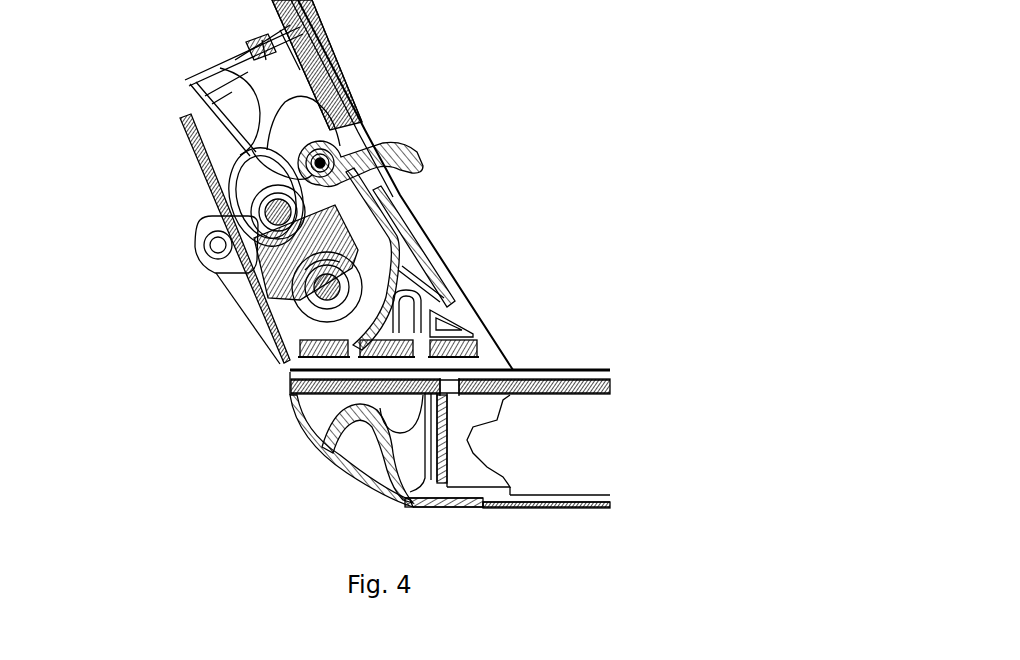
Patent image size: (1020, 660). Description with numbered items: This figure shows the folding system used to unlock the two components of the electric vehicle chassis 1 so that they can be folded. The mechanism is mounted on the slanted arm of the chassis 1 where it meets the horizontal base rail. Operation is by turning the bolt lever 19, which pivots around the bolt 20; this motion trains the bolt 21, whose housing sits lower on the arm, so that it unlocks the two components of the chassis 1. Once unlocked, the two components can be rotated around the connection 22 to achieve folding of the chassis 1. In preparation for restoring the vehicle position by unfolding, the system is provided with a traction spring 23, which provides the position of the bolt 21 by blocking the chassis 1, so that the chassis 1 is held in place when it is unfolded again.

The electric vehicle chassis 1 is at (240, 107).
The bolt lever 19 is at (412, 147).
The bolt 20 is at (325, 150).
The bolt 21 is at (268, 222).
The connection 22 is at (288, 328).
The traction spring 23 is at (340, 222).